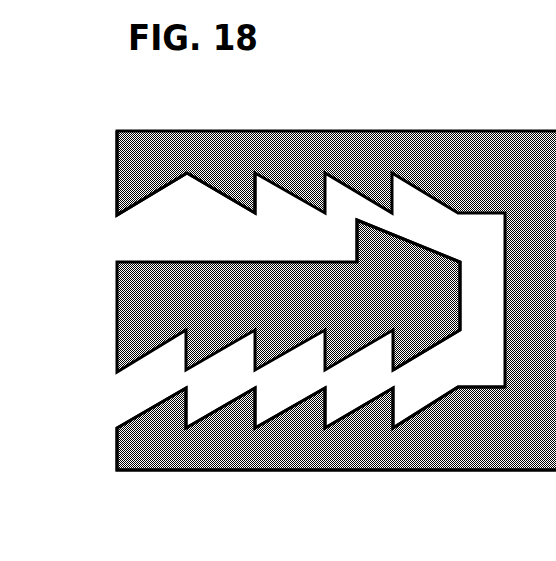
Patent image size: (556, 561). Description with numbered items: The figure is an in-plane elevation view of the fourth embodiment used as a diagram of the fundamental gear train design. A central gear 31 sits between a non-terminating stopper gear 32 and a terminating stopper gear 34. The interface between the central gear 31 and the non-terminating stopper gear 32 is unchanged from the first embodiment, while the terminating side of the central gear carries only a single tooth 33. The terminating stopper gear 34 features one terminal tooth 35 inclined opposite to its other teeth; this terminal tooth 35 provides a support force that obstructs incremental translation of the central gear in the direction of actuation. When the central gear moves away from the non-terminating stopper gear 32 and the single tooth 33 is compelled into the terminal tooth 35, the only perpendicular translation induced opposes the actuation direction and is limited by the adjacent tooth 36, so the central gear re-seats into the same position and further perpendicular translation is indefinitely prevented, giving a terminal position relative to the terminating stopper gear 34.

The central gear 31 is at (117, 303).
The non-terminating stopper gear 32 is at (287, 469).
The single tooth 33 is at (393, 235).
The terminating stopper gear 34 is at (320, 131).
The terminal tooth 35 is at (153, 185).
The adjacent tooth 36 is at (223, 194).